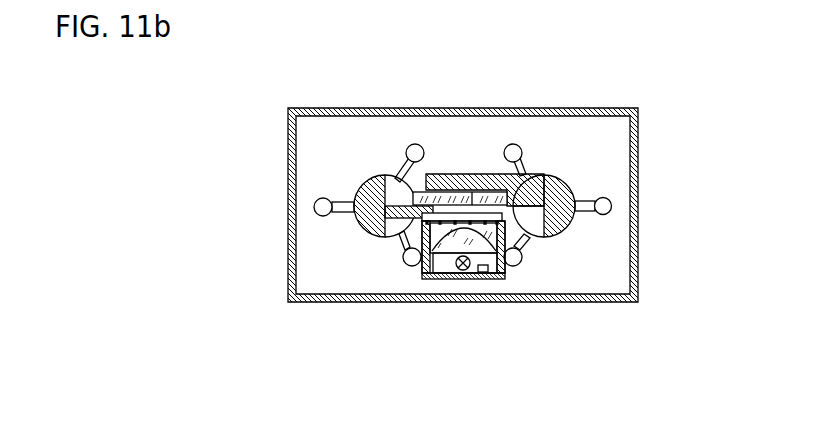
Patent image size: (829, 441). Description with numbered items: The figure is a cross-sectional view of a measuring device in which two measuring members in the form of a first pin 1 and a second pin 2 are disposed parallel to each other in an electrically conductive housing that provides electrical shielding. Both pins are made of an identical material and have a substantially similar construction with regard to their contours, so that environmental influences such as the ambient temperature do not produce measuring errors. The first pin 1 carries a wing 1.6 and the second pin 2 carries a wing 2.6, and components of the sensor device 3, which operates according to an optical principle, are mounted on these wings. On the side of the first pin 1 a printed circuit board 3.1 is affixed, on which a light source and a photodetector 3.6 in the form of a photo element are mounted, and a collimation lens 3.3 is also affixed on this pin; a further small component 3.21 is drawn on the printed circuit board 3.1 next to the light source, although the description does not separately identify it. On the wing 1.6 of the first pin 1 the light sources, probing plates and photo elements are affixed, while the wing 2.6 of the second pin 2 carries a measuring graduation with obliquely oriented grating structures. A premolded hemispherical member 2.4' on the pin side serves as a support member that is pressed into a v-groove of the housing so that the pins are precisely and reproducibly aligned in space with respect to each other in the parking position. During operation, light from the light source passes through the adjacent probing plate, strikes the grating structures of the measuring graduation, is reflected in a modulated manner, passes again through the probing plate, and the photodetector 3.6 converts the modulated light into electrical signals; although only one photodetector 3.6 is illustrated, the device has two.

The first pin 1 is at (364, 189).
The wing of first pin 1.6 is at (403, 258).
The second pin 2 is at (555, 178).
The hemispherical member 2.4' is at (648, 197).
The wing of second pin 2.6 is at (480, 174).
The sensor device 3 is at (461, 283).
The printed circuit board 3.1 is at (430, 275).
The sensor chip 3.21 is at (483, 273).
The collimation lens 3.3 is at (447, 254).
The photodetector 3.6 is at (490, 279).